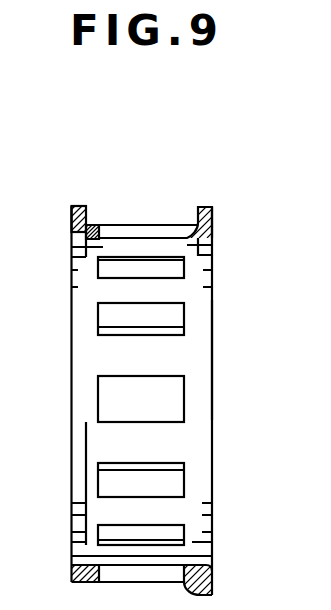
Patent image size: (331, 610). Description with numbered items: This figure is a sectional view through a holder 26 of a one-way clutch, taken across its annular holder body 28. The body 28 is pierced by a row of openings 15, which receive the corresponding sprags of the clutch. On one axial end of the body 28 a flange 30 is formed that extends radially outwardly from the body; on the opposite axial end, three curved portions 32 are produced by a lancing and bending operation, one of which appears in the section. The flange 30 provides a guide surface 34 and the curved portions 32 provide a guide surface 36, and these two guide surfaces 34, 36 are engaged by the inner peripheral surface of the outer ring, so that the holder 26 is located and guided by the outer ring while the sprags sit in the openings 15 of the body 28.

The openings 15 is at (178, 396).
The holder 26 is at (218, 332).
The holder body 28 is at (197, 361).
The flange 30 is at (212, 223).
The curved portions 32 is at (72, 226).
The guide surface 34 is at (207, 207).
The guide surface 36 is at (77, 206).